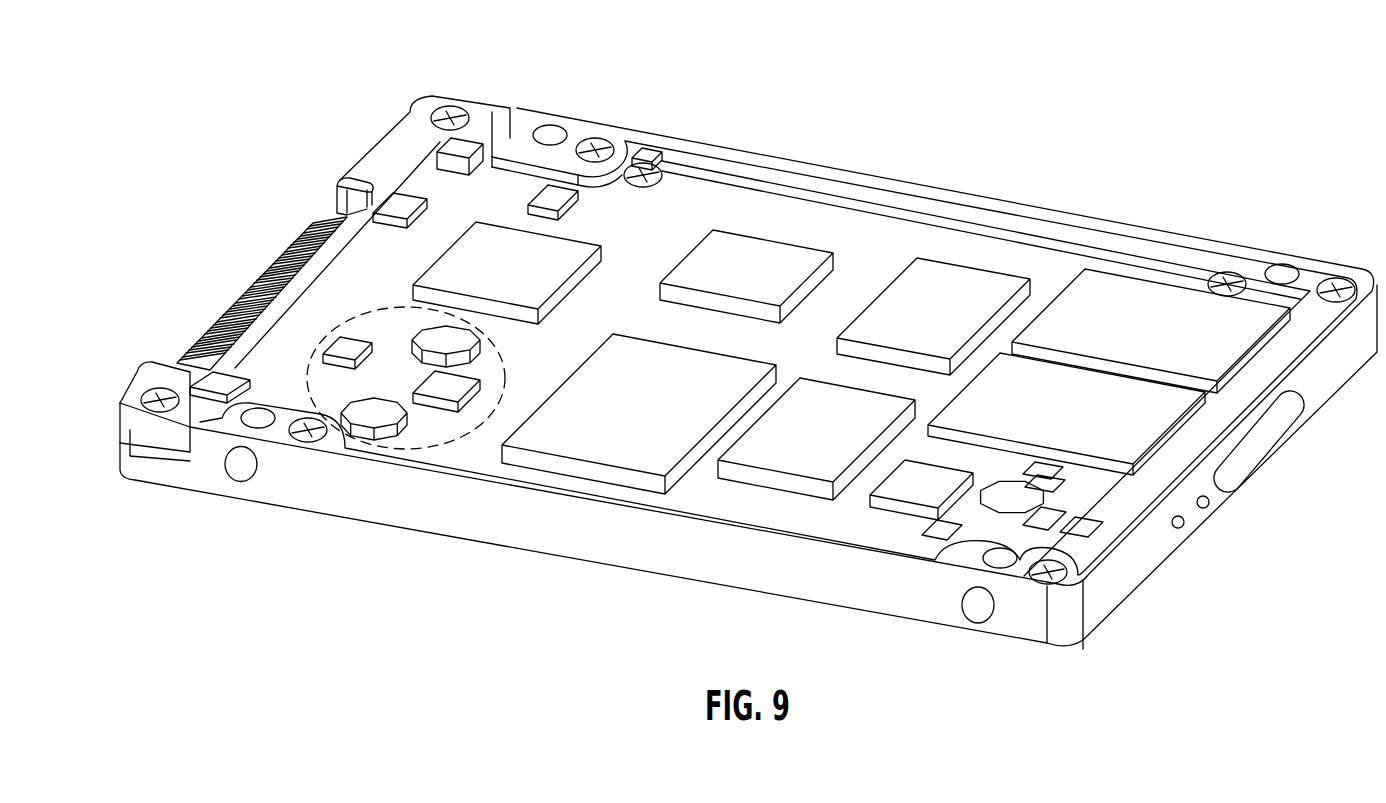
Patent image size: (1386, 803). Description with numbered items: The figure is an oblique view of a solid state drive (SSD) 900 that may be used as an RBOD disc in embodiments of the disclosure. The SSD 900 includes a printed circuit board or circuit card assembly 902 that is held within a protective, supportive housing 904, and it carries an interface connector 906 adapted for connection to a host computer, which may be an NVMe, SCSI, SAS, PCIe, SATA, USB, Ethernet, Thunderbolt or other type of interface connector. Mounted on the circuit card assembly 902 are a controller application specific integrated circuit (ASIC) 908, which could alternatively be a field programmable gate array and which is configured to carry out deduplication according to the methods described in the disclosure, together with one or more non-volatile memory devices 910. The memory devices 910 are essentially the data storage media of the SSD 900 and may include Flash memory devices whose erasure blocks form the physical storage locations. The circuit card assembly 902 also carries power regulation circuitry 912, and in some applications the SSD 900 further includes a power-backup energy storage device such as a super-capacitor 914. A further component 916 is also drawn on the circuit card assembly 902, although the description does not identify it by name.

The solid state drive 900 is at (1238, 83).
The printed circuit board 902 is at (842, 222).
The housing 904 is at (453, 523).
The interface connector 906 is at (218, 322).
The controller application specific integrated circuit 908 is at (480, 253).
The non-volatile memory device 910 is at (1163, 303).
The power regulation circuitry 912 is at (363, 317).
The super-capacitor 914 is at (640, 478).
The integrated circuit chip 916 is at (733, 245).